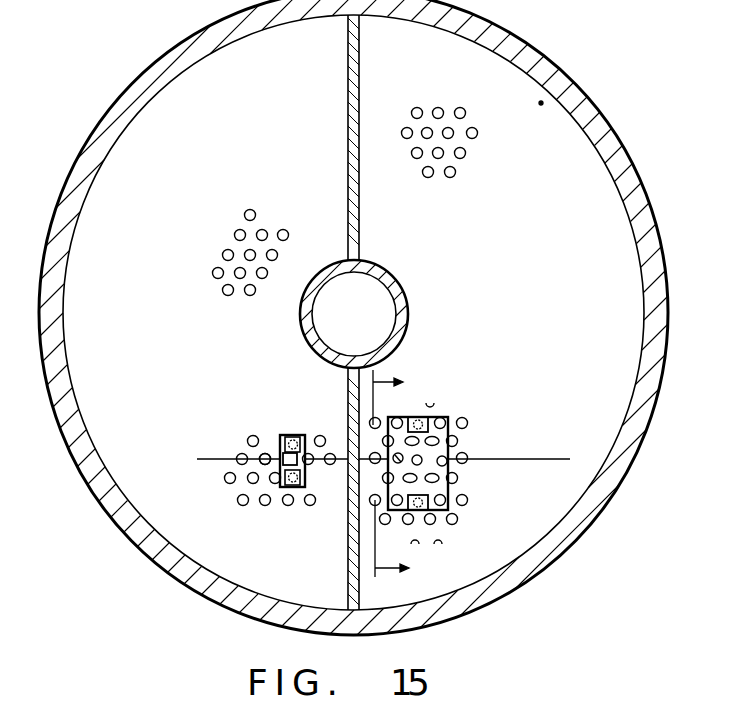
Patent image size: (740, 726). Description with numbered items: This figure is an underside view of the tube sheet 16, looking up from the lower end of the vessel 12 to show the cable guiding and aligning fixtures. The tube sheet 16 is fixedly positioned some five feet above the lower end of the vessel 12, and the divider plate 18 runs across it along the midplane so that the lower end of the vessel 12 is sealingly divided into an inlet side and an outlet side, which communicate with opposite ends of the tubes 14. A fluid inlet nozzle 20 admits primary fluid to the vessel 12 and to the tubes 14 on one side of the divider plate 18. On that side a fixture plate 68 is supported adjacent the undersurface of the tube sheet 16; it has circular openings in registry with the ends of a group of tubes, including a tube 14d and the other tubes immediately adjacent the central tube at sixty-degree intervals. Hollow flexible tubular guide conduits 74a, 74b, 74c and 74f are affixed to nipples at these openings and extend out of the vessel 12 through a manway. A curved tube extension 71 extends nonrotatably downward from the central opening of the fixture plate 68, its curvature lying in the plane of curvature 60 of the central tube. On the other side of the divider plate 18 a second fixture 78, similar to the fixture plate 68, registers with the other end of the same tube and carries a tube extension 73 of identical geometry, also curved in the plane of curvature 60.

The vessel 12 is at (612, 123).
The tubes 14 is at (437, 107).
The tube 14d is at (393, 455).
The tube sheet 16 is at (541, 103).
The divider plate 18 is at (347, 66).
The fluid inlet nozzle 20 is at (354, 314).
The plane of curvature 60 is at (209, 459).
The fixture plate 68 is at (437, 417).
The curved tube extension 71 is at (413, 462).
The tube extension 73 is at (273, 448).
The flexible tubular guide conduit 74a is at (444, 462).
The flexible tubular guide conduit 74b is at (433, 483).
The flexible tubular guide conduit 74c is at (405, 481).
The flexible tubular guide conduit 74f is at (436, 442).
The fixture 78 is at (290, 435).